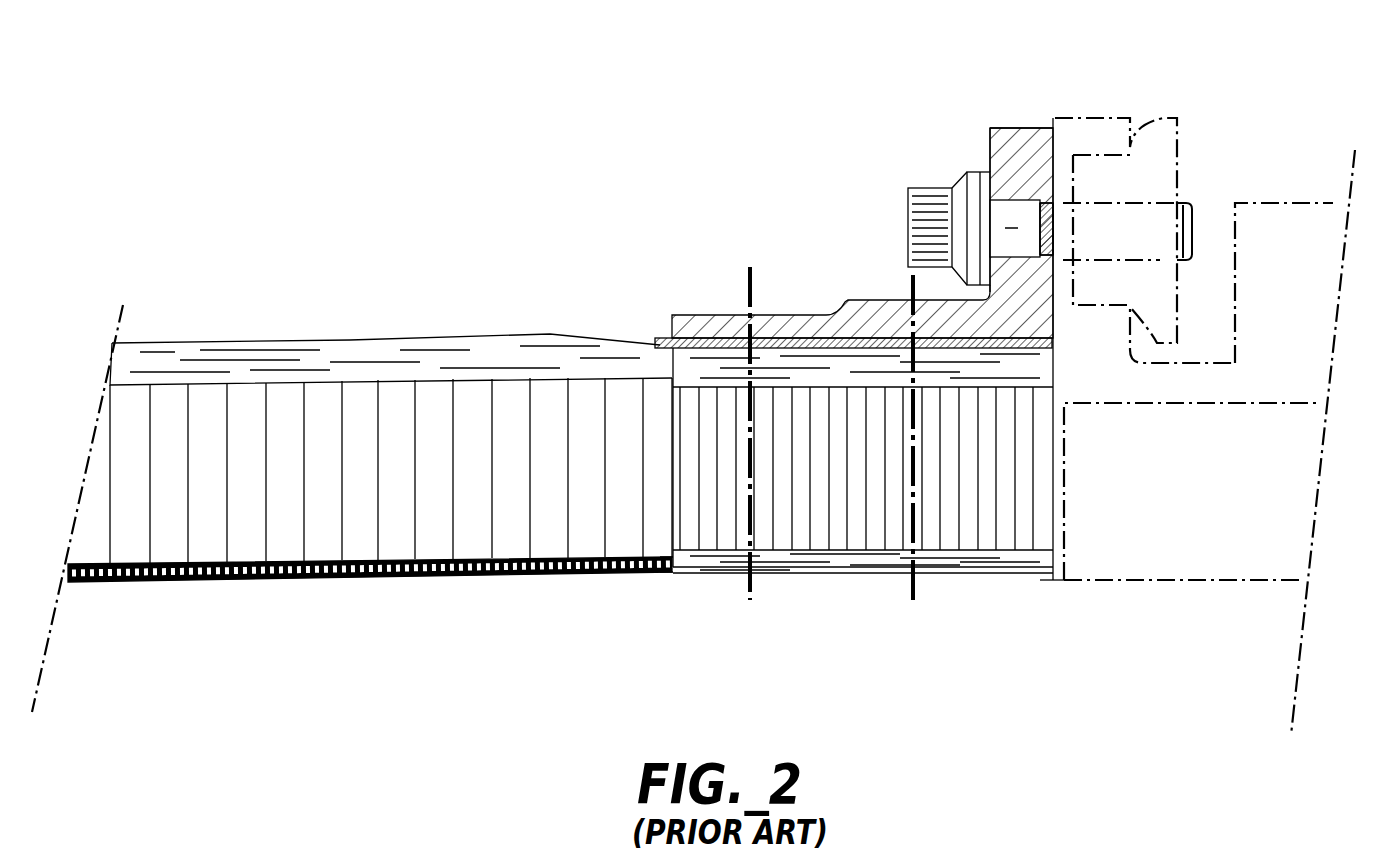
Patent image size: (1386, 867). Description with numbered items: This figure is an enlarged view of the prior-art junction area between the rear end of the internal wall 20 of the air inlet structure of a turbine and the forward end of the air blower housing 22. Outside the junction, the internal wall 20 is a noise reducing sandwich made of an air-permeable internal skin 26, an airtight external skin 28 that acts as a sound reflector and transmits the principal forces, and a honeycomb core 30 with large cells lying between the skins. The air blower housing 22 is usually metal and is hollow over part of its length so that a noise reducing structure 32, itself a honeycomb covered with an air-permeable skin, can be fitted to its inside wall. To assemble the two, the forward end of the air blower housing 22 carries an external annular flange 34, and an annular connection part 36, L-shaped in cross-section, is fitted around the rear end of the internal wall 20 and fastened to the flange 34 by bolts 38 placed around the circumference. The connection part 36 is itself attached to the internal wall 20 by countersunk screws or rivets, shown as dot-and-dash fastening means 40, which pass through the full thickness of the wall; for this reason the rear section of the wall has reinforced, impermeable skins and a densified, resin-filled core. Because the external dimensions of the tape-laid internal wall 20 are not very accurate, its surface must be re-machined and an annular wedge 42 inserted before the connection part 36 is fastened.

The internal wall 20 is at (235, 330).
The air blower housing 22 is at (1311, 190).
The internal skin 26 is at (285, 577).
The external skin 28 is at (418, 352).
The honeycomb core 30 is at (458, 490).
The noise reducing structure 32 is at (1185, 520).
The external annular flange 34 is at (1100, 137).
The annular connection part 36 is at (1017, 150).
The bolts 38 is at (947, 197).
The fastening means 40 is at (913, 606).
The annular wedge 42 is at (657, 337).